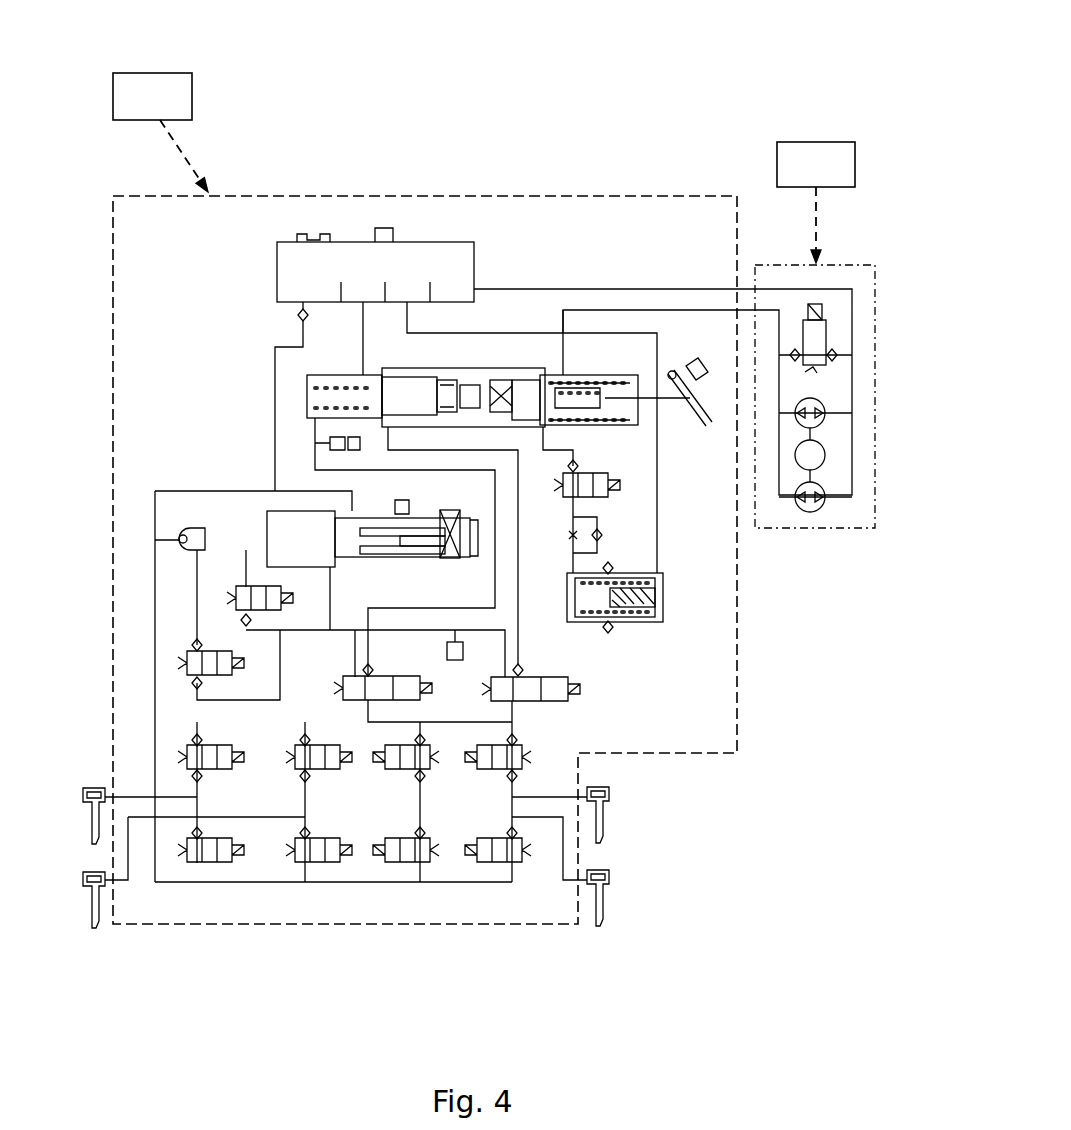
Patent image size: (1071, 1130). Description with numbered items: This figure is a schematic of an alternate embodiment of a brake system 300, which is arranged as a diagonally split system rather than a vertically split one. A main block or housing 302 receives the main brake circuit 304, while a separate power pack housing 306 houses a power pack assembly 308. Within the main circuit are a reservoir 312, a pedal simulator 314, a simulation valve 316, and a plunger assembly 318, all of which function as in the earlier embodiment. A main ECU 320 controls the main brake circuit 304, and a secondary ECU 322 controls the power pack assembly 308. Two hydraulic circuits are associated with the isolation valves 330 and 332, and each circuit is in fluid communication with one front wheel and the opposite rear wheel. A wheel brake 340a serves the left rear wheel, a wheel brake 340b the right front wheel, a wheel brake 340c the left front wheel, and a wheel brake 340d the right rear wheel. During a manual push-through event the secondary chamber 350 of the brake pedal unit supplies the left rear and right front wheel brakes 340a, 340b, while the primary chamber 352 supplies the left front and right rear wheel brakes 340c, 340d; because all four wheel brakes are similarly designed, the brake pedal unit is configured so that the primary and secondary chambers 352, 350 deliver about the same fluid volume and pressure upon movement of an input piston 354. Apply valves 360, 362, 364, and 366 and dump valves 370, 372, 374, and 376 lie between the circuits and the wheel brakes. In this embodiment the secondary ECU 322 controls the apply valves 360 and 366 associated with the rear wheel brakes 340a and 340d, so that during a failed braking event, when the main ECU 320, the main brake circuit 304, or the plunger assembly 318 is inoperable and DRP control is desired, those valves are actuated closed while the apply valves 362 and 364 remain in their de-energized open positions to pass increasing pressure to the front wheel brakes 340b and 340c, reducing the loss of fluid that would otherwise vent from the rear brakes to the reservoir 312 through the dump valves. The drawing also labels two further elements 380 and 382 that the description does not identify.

The brake system 300 is at (425, 477).
The main block or housing 302 is at (281, 194).
The main brake circuit 304 is at (443, 382).
The power pack housing 306 is at (715, 342).
The power pack assembly 308 is at (862, 255).
The reservoir 312 is at (414, 258).
The pedal simulator 314 is at (665, 605).
The simulation valve 316 is at (608, 497).
The plunger assembly 318 is at (528, 339).
The main ECU 320 is at (157, 72).
The secondary ECU 322 is at (818, 140).
The isolation valve 330 is at (440, 672).
The isolation valve 332 is at (567, 678).
The wheel brake 340a is at (87, 790).
The wheel brake 340b is at (85, 905).
The wheel brake 340c is at (612, 880).
The wheel brake 340d is at (612, 790).
The secondary chamber 350 is at (322, 397).
The primary chamber 352 is at (448, 454).
The input piston 354 is at (605, 385).
The apply valve 360 is at (187, 748).
The apply valve 362 is at (330, 770).
The apply valve 364 is at (440, 770).
The apply valve 366 is at (522, 752).
The dump valve 370 is at (210, 866).
The dump valve 372 is at (335, 866).
The dump valve 374 is at (435, 866).
The dump valve 376 is at (520, 866).
The piston 380 is at (488, 415).
The pressure chamber 382 is at (395, 388).